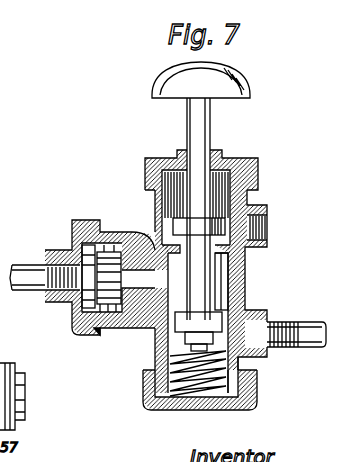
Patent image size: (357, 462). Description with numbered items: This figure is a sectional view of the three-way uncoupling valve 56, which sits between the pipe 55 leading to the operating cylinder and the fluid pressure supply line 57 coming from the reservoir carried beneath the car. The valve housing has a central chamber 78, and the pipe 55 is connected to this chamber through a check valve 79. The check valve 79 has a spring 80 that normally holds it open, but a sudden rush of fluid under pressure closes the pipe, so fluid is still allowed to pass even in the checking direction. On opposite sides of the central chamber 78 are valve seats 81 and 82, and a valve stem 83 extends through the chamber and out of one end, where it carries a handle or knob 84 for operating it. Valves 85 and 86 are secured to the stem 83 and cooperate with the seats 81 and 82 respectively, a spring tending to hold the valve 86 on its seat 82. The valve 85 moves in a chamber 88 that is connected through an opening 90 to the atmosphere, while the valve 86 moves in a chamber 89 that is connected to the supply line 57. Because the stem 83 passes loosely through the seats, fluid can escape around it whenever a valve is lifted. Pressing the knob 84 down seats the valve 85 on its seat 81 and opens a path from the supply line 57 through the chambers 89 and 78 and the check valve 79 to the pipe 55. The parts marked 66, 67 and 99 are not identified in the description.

The knob 84 is at (236, 84).
The valve stem 83 is at (212, 135).
The chamber 88 is at (242, 170).
The valve 85 is at (222, 213).
The uncoupling valve 56 is at (173, 208).
The opening 90 is at (268, 227).
The valve seat 81 is at (268, 244).
The central chamber 78 is at (228, 276).
The valve 86 is at (244, 312).
The fluid pressure supply line 57 is at (294, 333).
The chamber wall 67 is at (248, 366).
The valve plug 66 is at (250, 300).
The chamber 89 is at (152, 362).
The valve seat 82 is at (146, 322).
The pipe 55 is at (16, 290).
The spring 80 is at (86, 236).
The check valve 79 is at (76, 332).
The bolt 99 is at (12, 385).